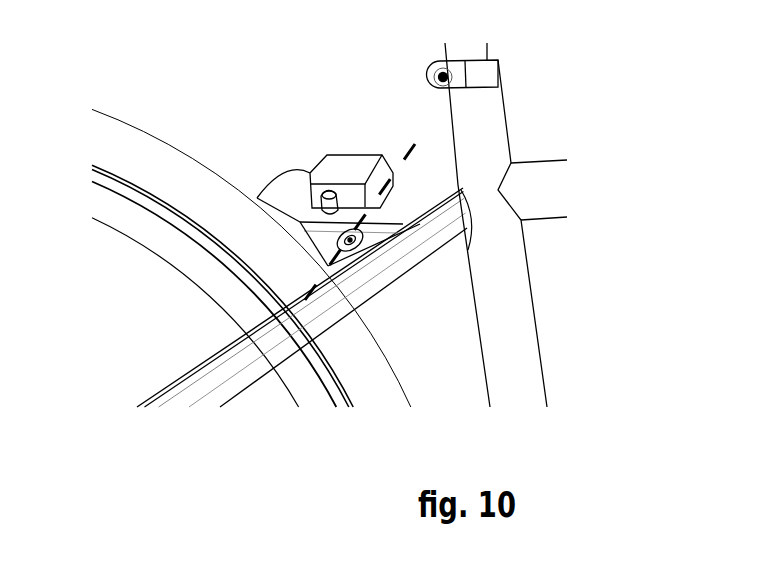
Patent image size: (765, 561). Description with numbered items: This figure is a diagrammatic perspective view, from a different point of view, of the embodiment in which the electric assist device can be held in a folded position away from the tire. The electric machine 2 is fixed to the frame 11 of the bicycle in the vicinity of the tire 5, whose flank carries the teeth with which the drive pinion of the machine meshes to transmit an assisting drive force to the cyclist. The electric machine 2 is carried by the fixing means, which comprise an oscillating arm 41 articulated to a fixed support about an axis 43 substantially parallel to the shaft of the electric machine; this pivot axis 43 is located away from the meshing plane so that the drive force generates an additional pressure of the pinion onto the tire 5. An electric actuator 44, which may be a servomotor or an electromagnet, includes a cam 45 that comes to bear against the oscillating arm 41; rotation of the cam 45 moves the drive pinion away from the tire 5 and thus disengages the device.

The electric machine 2 is at (283, 197).
The tire 5 is at (127, 153).
The frame 11 is at (493, 132).
The oscillating arm 41 is at (322, 230).
The axis 43 is at (417, 137).
The electric actuator 44 is at (363, 164).
The cam 45 is at (338, 200).